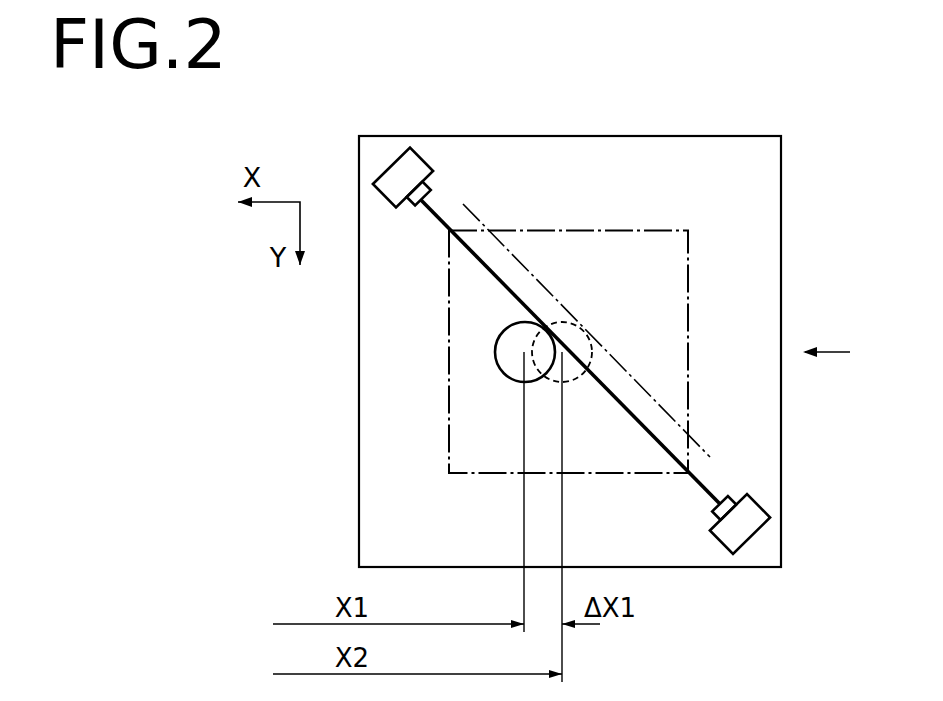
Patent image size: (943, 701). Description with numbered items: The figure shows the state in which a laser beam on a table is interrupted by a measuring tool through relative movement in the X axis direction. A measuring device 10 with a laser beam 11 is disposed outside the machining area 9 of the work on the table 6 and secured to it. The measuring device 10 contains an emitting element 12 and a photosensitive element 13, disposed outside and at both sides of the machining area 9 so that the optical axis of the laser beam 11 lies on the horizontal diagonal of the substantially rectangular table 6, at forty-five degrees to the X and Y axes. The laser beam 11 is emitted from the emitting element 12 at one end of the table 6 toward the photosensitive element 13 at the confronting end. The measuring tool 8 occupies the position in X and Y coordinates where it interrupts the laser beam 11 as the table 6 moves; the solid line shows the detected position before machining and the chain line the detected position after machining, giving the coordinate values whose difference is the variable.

The table 6 is at (707, 136).
The measuring tool 8 is at (496, 353).
The machining area 9 is at (612, 230).
The measuring device 10 is at (450, 192).
The laser beam 11 is at (505, 283).
The emitting element 12 is at (752, 520).
The photosensitive element 13 is at (412, 165).